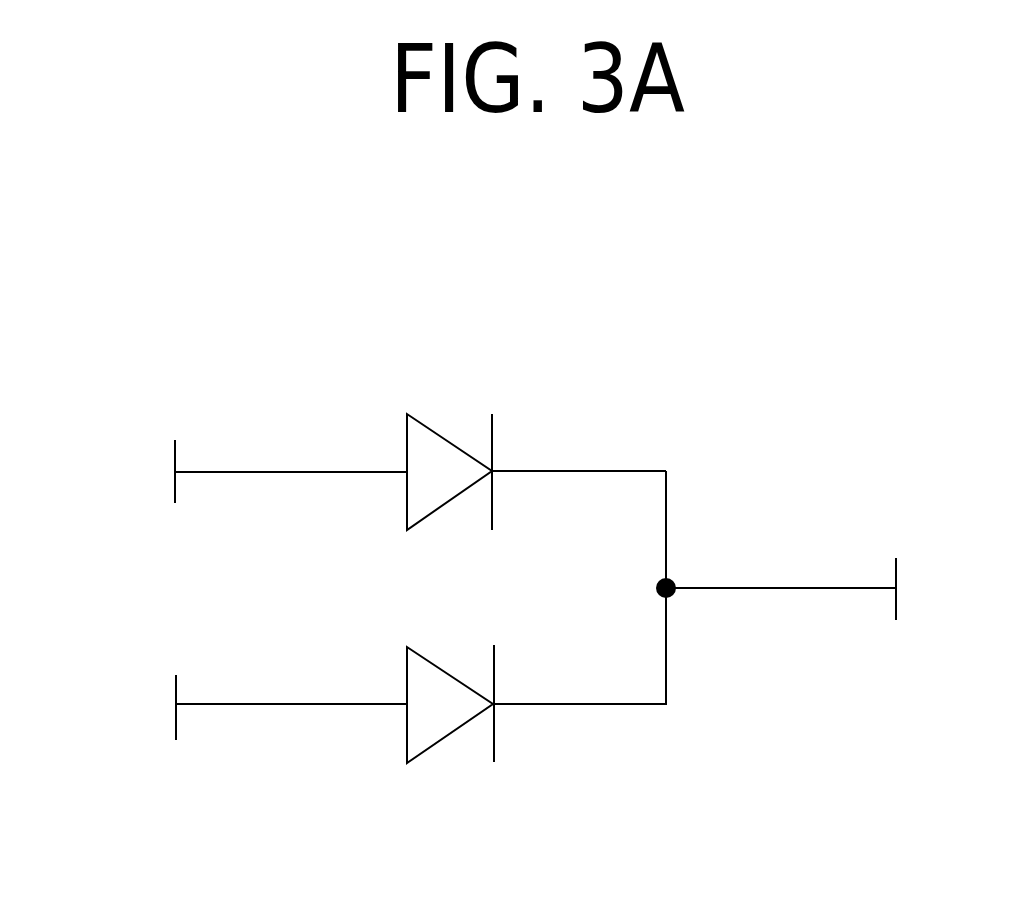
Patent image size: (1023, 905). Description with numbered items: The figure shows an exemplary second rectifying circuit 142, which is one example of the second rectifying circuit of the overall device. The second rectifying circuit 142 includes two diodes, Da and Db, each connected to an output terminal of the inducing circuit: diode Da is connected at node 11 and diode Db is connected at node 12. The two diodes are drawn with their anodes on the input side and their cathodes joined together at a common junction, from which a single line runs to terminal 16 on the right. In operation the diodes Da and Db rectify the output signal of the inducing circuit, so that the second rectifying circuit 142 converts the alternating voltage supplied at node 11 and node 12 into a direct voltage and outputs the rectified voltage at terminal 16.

The second rectifying circuit 142 is at (897, 329).
The node 11 is at (175, 445).
The node 12 is at (176, 736).
The output terminal 16 is at (896, 558).